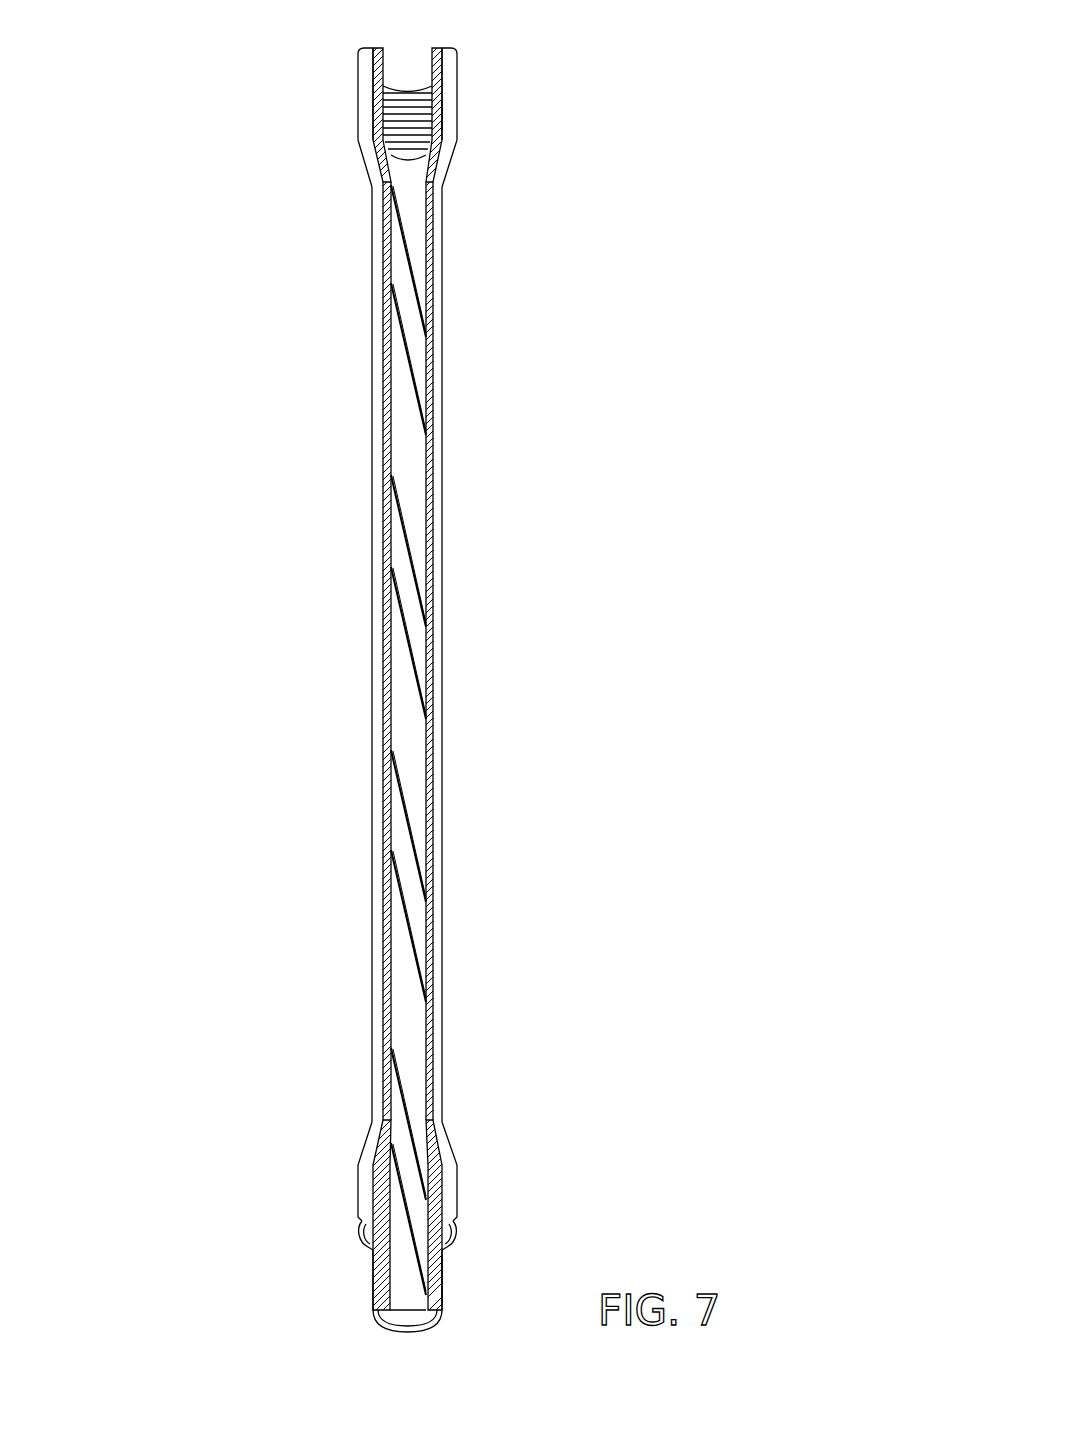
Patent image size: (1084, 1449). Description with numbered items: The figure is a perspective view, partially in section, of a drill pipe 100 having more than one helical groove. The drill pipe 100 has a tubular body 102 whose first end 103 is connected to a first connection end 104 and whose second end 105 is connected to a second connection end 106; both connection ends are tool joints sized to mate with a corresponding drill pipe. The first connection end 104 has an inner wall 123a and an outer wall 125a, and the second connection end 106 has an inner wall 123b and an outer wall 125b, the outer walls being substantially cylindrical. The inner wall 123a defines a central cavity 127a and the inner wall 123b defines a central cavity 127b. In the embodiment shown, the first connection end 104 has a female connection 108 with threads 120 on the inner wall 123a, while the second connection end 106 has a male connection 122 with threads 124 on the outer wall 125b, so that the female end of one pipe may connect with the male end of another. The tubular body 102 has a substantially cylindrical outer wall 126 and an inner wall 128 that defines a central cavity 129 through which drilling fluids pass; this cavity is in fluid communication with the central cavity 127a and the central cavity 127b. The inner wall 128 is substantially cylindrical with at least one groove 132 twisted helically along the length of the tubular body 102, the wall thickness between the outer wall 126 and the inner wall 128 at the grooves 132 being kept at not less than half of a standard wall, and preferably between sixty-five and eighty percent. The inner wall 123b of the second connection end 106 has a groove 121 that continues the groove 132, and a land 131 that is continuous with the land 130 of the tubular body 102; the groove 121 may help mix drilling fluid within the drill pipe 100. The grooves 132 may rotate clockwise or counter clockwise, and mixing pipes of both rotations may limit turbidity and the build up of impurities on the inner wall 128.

The drill pipe 100 is at (690, 100).
The tubular body 102 is at (388, 522).
The first end 103 is at (446, 173).
The first connection end 104 is at (359, 137).
The second end 105 is at (434, 1113).
The second connection end 106 is at (456, 1185).
The female connection 108 is at (451, 140).
The threads 120 is at (409, 158).
The groove 121 is at (417, 1215).
The male connection 122 is at (445, 1282).
The inner wall 123a is at (387, 50).
The inner wall 123b is at (401, 1209).
The threads 124 is at (373, 1267).
The outer wall 125a is at (453, 122).
The outer wall 125b is at (364, 1222).
The outer wall 126 is at (372, 415).
The central cavity 127a is at (407, 112).
The central cavity 127b is at (413, 1313).
The inner wall 128 is at (392, 703).
The central cavity 129 is at (409, 525).
The land 130 is at (410, 470).
The land 131 is at (403, 1262).
The groove 132 is at (392, 288).